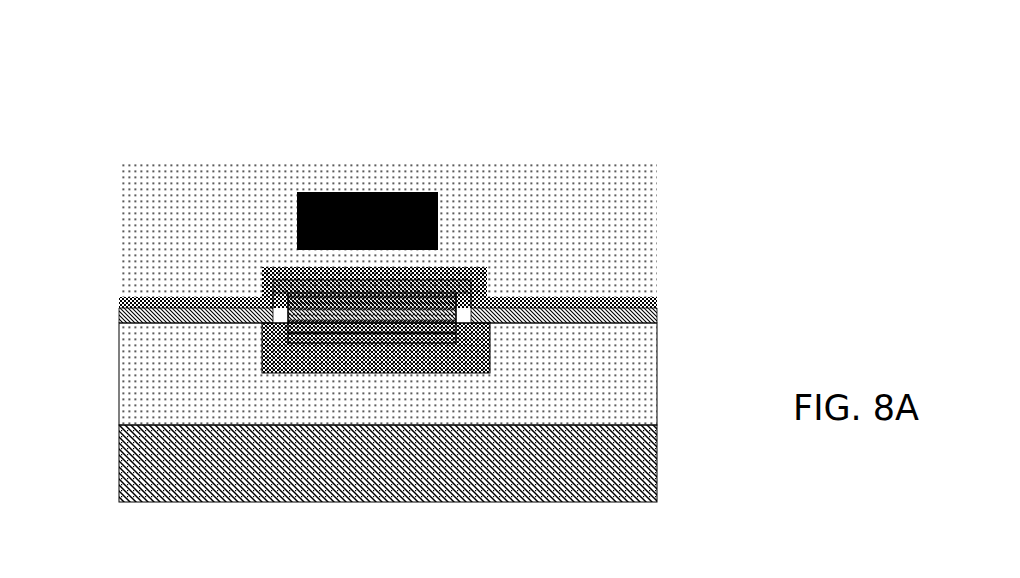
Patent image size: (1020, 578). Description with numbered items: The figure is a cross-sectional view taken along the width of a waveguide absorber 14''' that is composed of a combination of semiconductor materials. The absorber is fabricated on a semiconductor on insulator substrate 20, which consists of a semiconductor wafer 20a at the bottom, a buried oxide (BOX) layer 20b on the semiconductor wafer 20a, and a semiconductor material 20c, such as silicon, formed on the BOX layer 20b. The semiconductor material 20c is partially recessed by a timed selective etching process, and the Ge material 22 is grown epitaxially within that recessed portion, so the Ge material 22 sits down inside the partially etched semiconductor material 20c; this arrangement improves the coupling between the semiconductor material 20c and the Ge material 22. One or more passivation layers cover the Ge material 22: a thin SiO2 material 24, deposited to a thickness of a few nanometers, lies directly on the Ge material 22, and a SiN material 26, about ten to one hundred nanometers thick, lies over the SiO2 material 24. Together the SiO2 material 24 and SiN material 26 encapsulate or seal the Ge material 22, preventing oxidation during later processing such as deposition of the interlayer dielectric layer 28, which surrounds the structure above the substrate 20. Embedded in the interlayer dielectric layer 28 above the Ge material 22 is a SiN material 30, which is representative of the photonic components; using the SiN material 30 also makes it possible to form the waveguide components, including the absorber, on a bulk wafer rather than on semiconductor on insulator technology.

The waveguide absorber 14''' is at (350, 287).
The semiconductor on insulator substrate 20 is at (112, 323).
The semiconductor wafer 20a is at (202, 483).
The buried oxide (BOX) layer 20b is at (325, 423).
The semiconductor material 20c is at (410, 373).
The Ge material 22 is at (305, 293).
The SiO2 material 24 is at (123, 317).
The SiN material 26 is at (125, 298).
The interlayer dielectric layer 28 is at (122, 213).
The SiN material 30 is at (400, 192).